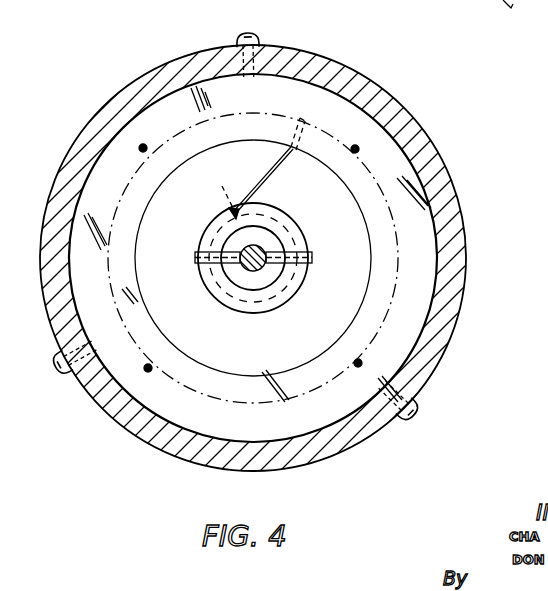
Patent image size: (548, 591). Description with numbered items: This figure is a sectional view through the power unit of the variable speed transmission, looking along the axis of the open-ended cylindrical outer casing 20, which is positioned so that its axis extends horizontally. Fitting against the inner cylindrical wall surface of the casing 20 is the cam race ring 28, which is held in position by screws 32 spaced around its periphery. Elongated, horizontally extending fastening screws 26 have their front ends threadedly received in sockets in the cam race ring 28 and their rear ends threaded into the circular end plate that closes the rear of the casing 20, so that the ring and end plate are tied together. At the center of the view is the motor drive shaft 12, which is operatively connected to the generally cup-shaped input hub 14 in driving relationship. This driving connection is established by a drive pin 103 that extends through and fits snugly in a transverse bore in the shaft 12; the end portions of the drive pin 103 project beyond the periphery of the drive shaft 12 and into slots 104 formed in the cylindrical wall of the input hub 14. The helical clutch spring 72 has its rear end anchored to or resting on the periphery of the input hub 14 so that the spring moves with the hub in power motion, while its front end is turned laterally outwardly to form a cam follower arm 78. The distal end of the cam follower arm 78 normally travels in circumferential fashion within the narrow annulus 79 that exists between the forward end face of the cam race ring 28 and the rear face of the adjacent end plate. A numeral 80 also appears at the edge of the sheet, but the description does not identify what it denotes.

The drive shaft 12 is at (257, 273).
The input hub 14 is at (291, 229).
The outer casing 20 is at (401, 104).
The fastening screws 26 is at (146, 146).
The cam race ring 28 is at (424, 276).
The screws 32 is at (254, 36).
The helical clutch spring 72 is at (250, 189).
The cam follower arm 78 is at (268, 182).
The annulus 79 is at (302, 119).
The member 80 is at (520, 14).
The drive pin 103 is at (312, 262).
The slots 104 is at (306, 253).